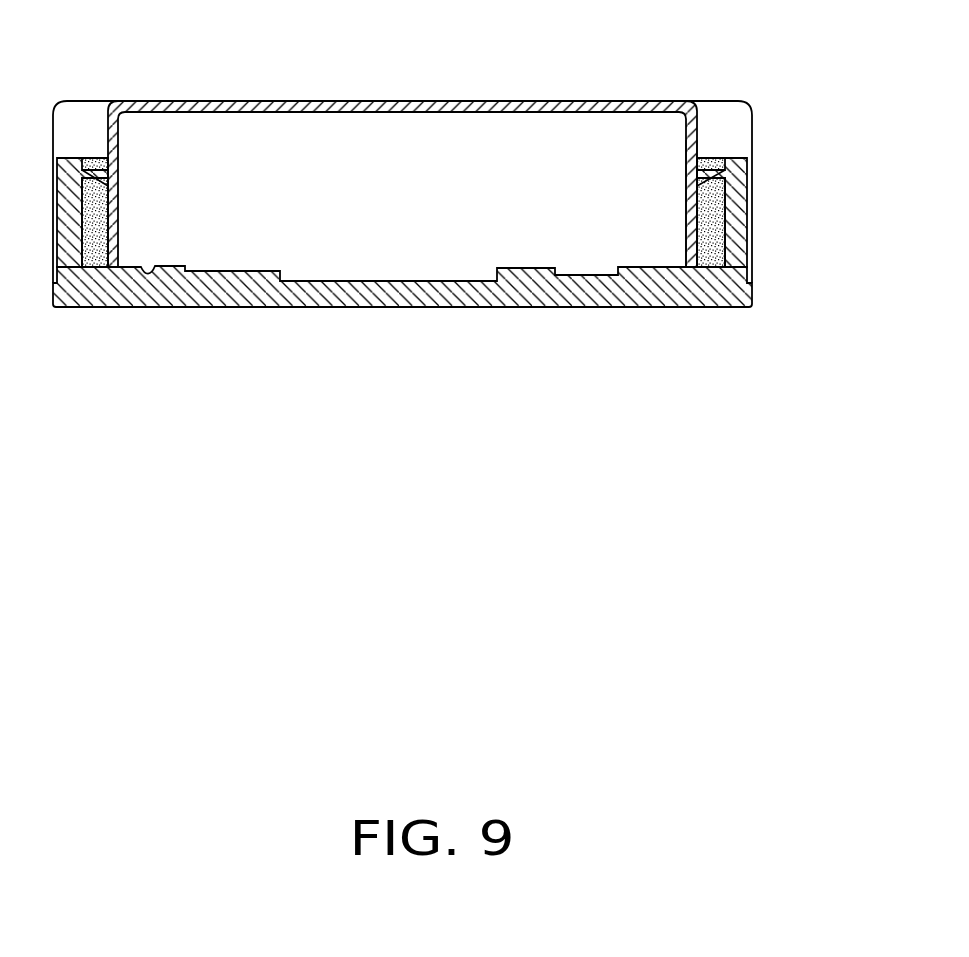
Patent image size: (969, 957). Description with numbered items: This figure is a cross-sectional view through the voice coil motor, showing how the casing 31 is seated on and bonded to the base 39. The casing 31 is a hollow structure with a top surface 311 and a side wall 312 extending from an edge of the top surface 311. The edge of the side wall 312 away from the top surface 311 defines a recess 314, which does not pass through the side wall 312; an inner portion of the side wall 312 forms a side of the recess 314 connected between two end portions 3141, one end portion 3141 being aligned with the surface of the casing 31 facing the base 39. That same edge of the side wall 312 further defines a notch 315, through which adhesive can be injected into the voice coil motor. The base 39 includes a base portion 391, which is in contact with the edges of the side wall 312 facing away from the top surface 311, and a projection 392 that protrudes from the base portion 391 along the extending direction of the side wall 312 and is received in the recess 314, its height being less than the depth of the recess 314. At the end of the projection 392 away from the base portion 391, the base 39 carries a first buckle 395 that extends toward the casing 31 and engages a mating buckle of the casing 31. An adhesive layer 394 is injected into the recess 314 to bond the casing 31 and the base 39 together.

The casing 31 is at (402, 190).
The top surface 311 is at (404, 89).
The side wall 312 is at (687, 222).
The recess 314 is at (707, 247).
The end portion 3141 is at (705, 280).
The notch 315 is at (708, 167).
The base 39 is at (475, 208).
The base portion 391 is at (745, 291).
The projection 392 is at (732, 221).
The adhesive layer 394 is at (95, 162).
The first buckle 395 is at (730, 166).